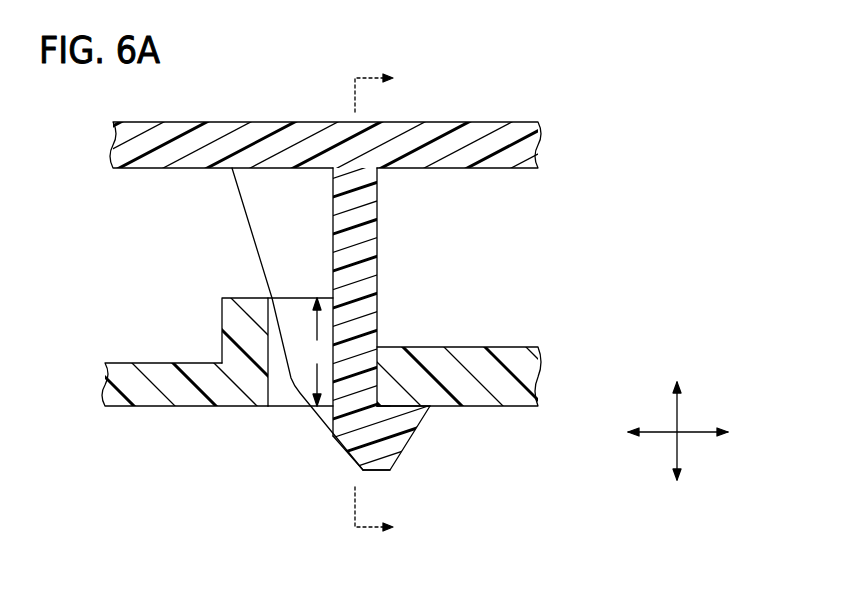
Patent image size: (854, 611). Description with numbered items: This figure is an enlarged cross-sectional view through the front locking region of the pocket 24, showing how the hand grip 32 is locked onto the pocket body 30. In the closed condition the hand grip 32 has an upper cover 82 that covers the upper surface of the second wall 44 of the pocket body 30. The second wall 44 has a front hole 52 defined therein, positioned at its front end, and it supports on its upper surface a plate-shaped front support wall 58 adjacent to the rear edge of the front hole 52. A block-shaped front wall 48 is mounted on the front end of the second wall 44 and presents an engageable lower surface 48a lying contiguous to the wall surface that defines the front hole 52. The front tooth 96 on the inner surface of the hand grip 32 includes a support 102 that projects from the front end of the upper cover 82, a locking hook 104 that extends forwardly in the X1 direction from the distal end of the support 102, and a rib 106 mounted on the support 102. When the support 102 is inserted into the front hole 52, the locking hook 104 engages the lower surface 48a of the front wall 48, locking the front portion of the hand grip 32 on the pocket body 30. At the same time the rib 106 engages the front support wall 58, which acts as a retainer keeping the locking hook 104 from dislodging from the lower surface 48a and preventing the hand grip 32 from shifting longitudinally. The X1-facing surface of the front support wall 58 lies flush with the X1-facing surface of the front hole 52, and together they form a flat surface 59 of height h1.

The pocket 24 is at (228, 86).
The pocket body 30 is at (340, 358).
The hand grip 32 is at (427, 286).
The second wall 44 is at (118, 377).
The front wall 48 is at (465, 360).
The engageable lower surface 48a is at (412, 412).
The front hole 52 is at (283, 397).
The front support wall 58 is at (227, 312).
The flat surface 59 is at (282, 298).
The upper cover 82 is at (538, 149).
The front tooth 96 is at (389, 473).
The support 102 is at (377, 228).
The locking hook 104 is at (392, 431).
The rib 106 is at (265, 207).